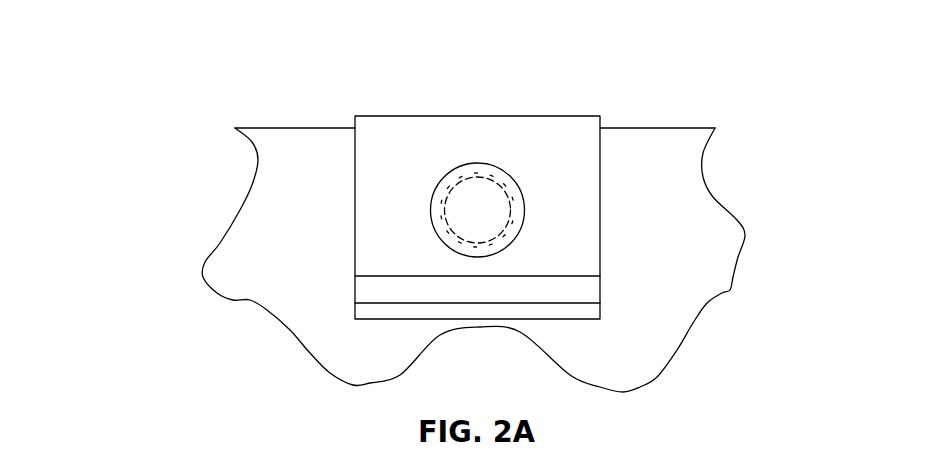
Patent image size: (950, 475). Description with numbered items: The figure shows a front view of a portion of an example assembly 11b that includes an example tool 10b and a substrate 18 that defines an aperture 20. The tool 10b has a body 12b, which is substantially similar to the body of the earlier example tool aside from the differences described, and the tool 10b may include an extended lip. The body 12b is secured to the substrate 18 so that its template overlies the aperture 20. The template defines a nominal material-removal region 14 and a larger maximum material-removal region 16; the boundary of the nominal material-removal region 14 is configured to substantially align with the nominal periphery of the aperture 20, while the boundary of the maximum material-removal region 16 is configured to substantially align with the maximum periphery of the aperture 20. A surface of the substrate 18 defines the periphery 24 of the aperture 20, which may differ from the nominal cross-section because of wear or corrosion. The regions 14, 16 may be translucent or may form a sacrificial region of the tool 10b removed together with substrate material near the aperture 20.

The example assembly 11b is at (426, 210).
The tool 10b is at (415, 116).
The body 12b is at (467, 133).
The maximum material-removal region 16 is at (480, 163).
The nominal material-removal region 14 is at (508, 201).
The substrate 18 is at (680, 205).
The aperture 20 is at (475, 220).
The periphery 24 is at (503, 222).